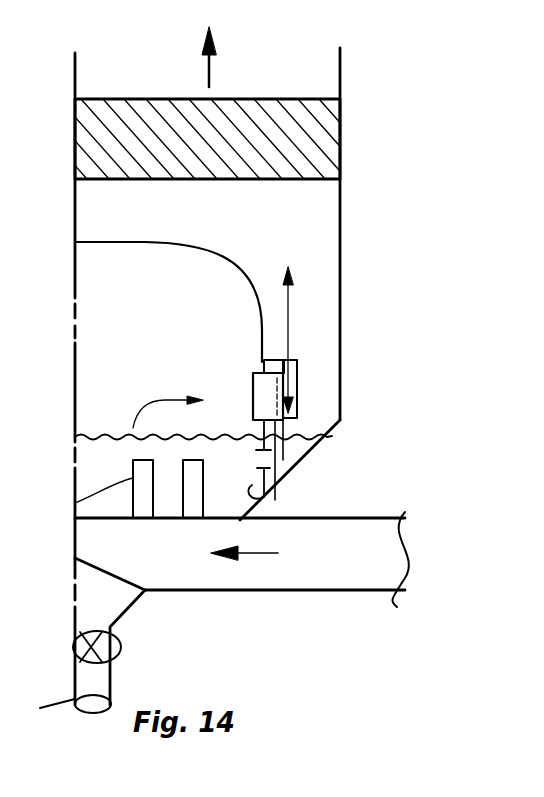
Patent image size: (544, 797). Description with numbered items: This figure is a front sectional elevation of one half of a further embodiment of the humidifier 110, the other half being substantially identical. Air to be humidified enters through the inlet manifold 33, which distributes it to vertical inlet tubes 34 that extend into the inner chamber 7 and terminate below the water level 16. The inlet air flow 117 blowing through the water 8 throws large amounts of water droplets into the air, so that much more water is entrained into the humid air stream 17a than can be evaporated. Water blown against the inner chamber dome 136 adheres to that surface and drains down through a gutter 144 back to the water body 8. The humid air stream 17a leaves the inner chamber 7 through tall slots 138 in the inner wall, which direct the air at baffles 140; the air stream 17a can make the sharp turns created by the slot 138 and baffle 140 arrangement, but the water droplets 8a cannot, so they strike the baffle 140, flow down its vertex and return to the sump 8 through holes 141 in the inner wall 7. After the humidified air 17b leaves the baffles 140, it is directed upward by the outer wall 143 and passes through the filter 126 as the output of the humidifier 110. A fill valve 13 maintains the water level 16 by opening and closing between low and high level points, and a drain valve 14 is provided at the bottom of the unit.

The humidifier 110 is at (163, 83).
The filter 126 is at (312, 145).
The outer wall 143 is at (342, 227).
The inner chamber dome 136 is at (220, 250).
The humidified air stream 17b is at (288, 308).
The fill valve 13 is at (70, 287).
The gutter 144 is at (272, 358).
The tall slots 138 is at (254, 402).
The baffles 140 is at (293, 402).
The holes 141 is at (272, 458).
The inner chamber 7 is at (266, 502).
The water 8 is at (88, 442).
The water droplets 8a is at (342, 430).
The humid air stream 17a is at (140, 416).
The water level 16 is at (105, 432).
The vertical inlet tubes 34 is at (75, 503).
The inlet manifold 33 is at (327, 591).
The duct flow direction 117 is at (262, 553).
The drain valve 14 is at (120, 643).